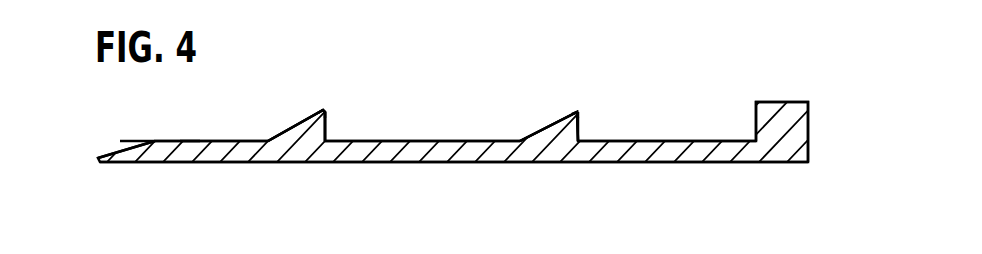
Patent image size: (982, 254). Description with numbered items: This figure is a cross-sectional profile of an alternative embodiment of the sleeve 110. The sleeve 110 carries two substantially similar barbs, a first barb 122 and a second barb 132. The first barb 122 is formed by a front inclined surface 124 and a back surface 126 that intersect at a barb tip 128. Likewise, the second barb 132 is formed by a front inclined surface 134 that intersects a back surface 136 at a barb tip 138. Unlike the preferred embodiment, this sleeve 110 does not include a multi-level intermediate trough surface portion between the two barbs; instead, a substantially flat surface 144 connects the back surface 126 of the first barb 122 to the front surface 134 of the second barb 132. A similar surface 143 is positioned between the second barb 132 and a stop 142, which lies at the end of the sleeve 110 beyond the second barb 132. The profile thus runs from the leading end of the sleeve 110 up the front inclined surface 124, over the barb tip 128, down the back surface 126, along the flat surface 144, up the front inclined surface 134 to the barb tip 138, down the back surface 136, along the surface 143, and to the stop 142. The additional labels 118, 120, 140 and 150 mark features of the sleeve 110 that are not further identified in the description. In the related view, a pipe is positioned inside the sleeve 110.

The sleeve 110 is at (696, 194).
The upper surface 118 is at (152, 135).
The base 120 is at (201, 166).
The first barb 122 is at (303, 114).
The front inclined surface 124 is at (283, 133).
The back surface 126 is at (327, 125).
The barb tip 128 is at (321, 113).
The second barb 132 is at (557, 113).
The front inclined surface 134 is at (530, 135).
The back surface 136 is at (580, 125).
The barb tip 138 is at (578, 112).
The tapered leading tip 140 is at (121, 147).
The stop 142 is at (770, 101).
The similar surface 143 is at (673, 140).
The substantially flat surface 144 is at (445, 140).
The upper surface segment 150 is at (195, 141).